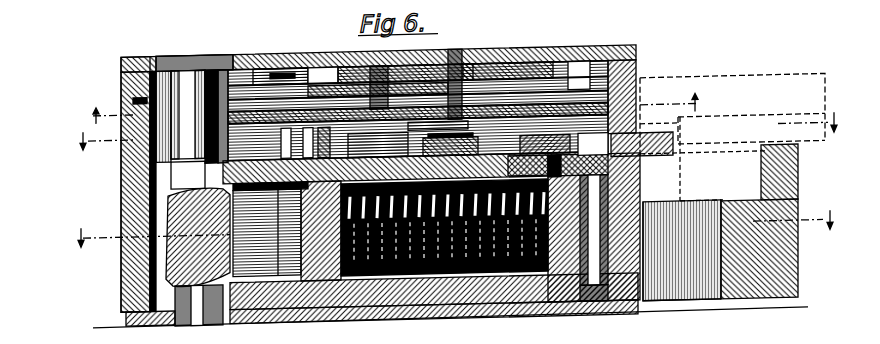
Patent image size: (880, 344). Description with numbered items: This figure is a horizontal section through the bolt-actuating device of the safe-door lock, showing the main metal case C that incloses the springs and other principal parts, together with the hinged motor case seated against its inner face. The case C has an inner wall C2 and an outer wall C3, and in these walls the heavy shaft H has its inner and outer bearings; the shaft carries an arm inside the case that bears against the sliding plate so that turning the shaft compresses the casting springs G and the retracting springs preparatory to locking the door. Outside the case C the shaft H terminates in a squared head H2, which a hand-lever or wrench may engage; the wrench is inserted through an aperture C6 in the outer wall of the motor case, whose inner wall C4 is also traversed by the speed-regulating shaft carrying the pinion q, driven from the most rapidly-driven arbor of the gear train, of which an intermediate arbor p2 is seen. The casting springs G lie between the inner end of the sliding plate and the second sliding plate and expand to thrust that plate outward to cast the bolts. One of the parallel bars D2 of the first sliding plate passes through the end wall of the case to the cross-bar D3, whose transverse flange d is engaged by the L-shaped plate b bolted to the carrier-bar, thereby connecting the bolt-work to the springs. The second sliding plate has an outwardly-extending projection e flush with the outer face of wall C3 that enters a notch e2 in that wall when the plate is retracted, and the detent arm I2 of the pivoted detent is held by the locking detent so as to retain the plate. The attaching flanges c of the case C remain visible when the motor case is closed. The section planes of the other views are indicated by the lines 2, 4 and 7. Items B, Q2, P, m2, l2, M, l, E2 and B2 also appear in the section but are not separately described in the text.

The case C is at (136, 191).
The inner wall C2 is at (262, 330).
The outer wall C3 is at (415, 168).
The inner wall of case C' C4 is at (128, 97).
The aperture C6 is at (185, 62).
The shaft H is at (197, 243).
The squared head H2 is at (198, 178).
The frame block B is at (378, 237).
The casting springs G is at (372, 274).
The slide piece Q2 is at (270, 66).
The pinion q is at (292, 66).
The slide P is at (418, 92).
The intermediate arbor p2 is at (366, 66).
The attaching flanges c is at (279, 138).
The lever arm m2 is at (438, 124).
The lever l2 is at (378, 144).
The cam M is at (450, 155).
The lever block l is at (596, 145).
The notch e2 is at (528, 165).
The shaft E2 is at (594, 238).
The projection e is at (632, 170).
The detent arm I2 is at (704, 158).
The L-shaped plate b is at (732, 114).
The bar B2 is at (751, 128).
The flange d is at (790, 176).
The cross-bar D3 is at (790, 264).
The bar D2 is at (682, 250).
The section line 4 4 is at (391, 110).
The section line 2 2 is at (457, 131).
The section line 7 7 is at (454, 229).